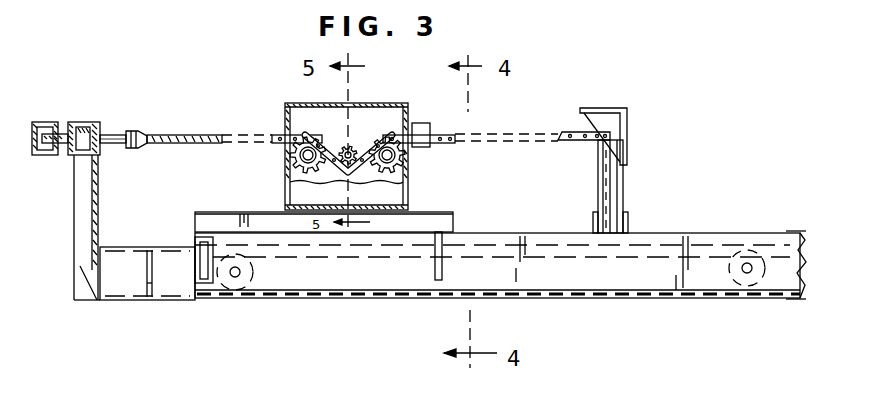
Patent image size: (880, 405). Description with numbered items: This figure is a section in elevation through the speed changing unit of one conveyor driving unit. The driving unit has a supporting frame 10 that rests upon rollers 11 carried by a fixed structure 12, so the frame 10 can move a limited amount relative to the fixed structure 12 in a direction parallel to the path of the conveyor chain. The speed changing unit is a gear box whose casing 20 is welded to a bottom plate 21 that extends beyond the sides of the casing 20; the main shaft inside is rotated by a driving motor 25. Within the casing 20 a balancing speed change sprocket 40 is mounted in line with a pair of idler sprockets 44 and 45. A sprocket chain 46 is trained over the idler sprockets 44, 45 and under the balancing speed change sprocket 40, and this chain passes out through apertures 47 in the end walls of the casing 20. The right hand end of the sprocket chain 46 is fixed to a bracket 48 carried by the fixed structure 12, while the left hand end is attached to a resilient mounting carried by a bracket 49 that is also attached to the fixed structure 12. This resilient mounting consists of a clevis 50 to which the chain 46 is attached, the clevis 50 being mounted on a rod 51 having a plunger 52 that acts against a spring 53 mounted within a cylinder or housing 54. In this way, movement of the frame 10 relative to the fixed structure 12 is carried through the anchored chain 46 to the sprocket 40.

The supporting frame 10 is at (190, 272).
The rollers 11 is at (262, 303).
The fixed structure 12 is at (796, 236).
The casing 20 is at (410, 191).
The bottom plate 21 is at (298, 202).
The driving motor 25 is at (430, 128).
The balancing speed change sprocket 40 is at (351, 149).
The idler sprocket 44 is at (404, 158).
The idler sprocket 45 is at (292, 162).
The sprocket chain 46 is at (201, 135).
The apertures 47 is at (285, 135).
The bracket 48 is at (623, 193).
The bracket 49 is at (97, 232).
The clevis 50 is at (141, 133).
The rod 51 is at (111, 143).
The plunger 52 is at (43, 122).
The spring 53 is at (55, 155).
The cylinder or housing 54 is at (82, 123).